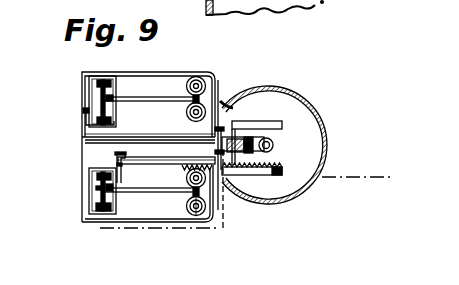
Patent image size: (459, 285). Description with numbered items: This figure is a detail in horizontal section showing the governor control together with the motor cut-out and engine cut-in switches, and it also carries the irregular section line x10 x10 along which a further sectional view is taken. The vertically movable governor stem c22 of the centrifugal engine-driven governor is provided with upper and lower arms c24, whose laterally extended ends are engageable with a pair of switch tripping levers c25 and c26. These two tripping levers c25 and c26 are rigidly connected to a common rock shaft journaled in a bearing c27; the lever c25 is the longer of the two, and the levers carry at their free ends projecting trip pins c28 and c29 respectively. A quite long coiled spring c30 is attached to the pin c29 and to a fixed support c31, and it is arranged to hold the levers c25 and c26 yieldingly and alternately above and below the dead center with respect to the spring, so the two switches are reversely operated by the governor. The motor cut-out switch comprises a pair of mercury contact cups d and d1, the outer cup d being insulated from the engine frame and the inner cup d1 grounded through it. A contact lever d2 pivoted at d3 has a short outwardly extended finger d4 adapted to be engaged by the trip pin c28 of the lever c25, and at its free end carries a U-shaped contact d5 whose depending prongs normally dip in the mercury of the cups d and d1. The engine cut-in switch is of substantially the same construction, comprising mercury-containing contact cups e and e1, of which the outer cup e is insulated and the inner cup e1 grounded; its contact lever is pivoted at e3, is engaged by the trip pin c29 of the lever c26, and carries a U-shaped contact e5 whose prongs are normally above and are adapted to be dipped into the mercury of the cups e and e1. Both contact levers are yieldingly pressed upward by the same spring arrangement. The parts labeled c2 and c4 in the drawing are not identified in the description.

The mercury contact cup d is at (198, 82).
The mercury contact cup d1 is at (210, 105).
The contact lever d2 is at (153, 99).
The pivot d3 is at (100, 87).
The finger d4 is at (85, 110).
The U-shaped contact d5 is at (199, 99).
The connecting piece c2 is at (143, 192).
The rod c4 is at (118, 191).
The governor stem c22 is at (272, 145).
The upper and lower arms c24 is at (218, 147).
The switch tripping lever c25 is at (107, 137).
The switch tripping lever c26 is at (119, 156).
The bearing c27 is at (252, 137).
The trip pin c28 is at (84, 120).
The trip pin c29 is at (100, 198).
The coiled spring c30 is at (255, 176).
The fixed support c31 is at (280, 167).
The mercury-containing contact cup e is at (196, 212).
The mercury-containing contact cup e1 is at (190, 182).
The pivot e3 is at (100, 200).
The U-shaped contact e5 is at (206, 205).
The section line x10 is at (229, 201).